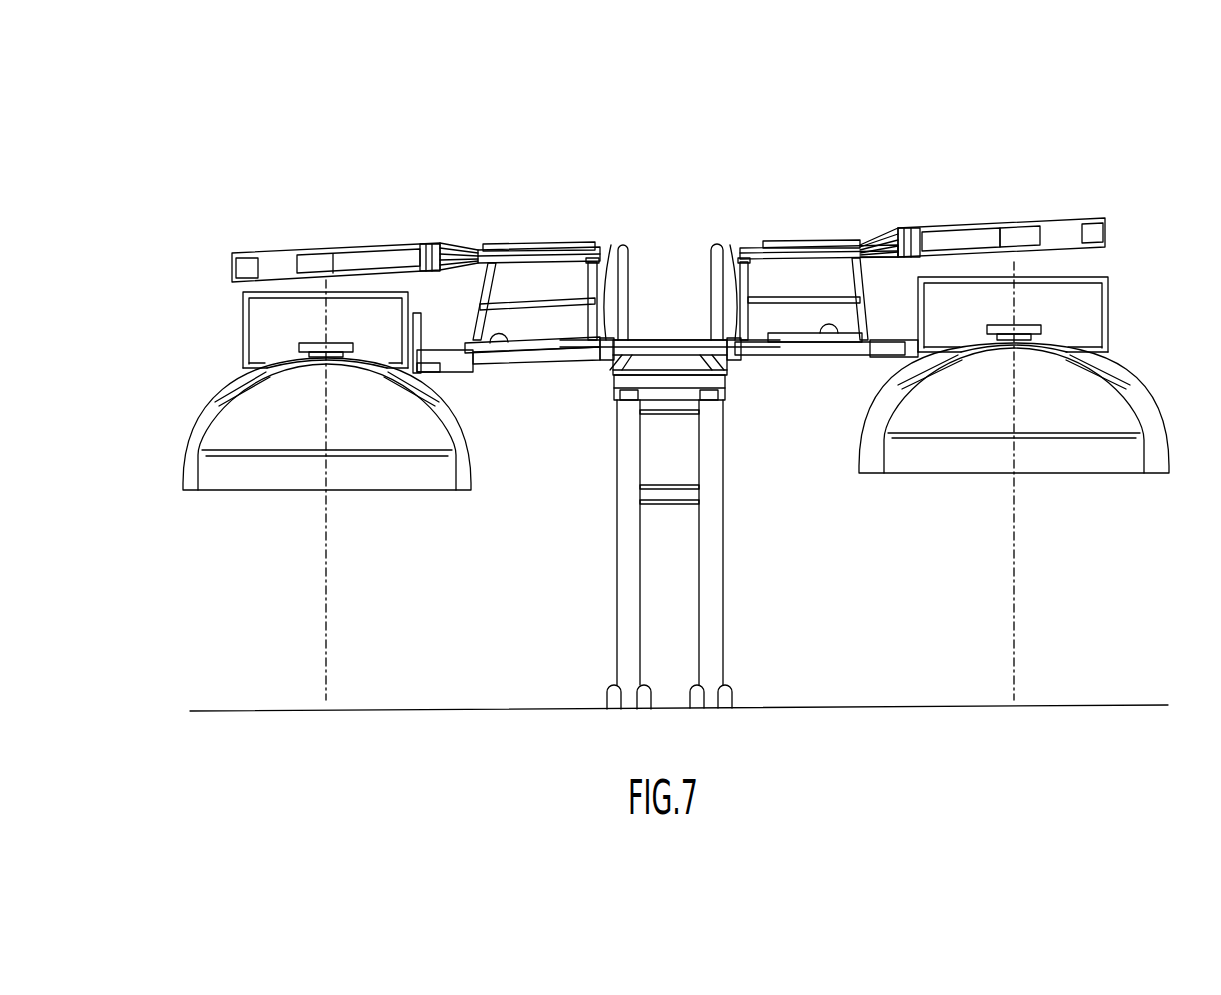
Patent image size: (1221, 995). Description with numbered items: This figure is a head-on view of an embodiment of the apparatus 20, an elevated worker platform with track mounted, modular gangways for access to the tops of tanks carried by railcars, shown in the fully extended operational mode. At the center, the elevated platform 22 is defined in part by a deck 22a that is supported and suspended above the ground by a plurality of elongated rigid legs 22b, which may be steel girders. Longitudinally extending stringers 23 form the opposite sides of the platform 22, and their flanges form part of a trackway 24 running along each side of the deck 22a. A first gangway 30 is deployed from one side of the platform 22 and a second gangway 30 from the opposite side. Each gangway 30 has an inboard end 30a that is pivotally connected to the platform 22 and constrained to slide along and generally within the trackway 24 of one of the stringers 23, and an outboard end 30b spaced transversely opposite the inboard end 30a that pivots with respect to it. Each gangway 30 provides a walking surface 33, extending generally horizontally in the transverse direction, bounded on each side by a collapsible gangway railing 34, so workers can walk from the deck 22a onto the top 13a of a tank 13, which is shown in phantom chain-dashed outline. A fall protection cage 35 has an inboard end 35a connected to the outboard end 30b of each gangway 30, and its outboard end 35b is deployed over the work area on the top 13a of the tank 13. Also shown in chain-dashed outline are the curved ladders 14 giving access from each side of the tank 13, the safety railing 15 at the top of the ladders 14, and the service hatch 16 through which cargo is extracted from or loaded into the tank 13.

The apparatus 20 is at (670, 359).
The tank 13 is at (205, 421).
The top of tank 13a is at (285, 360).
The curved ladder 14 is at (215, 396).
The safety railing 15 is at (243, 306).
The service hatch 16 is at (330, 345).
The elevated platform 22 is at (624, 414).
The deck 22a is at (650, 340).
The rigid legs 22b is at (623, 474).
The stringer 23 is at (626, 247).
The trackway 24 is at (597, 353).
The gangway 30 is at (670, 243).
The inboard end of gangway 30a is at (586, 356).
The outboard end of gangway 30b is at (901, 321).
The walking surface 33 is at (528, 340).
The gangway railing 34 is at (546, 247).
The fall protection cage 35 is at (352, 247).
The inboard end of fall protection cage 35a is at (432, 245).
The outboard end of fall protection cage 35b is at (234, 263).